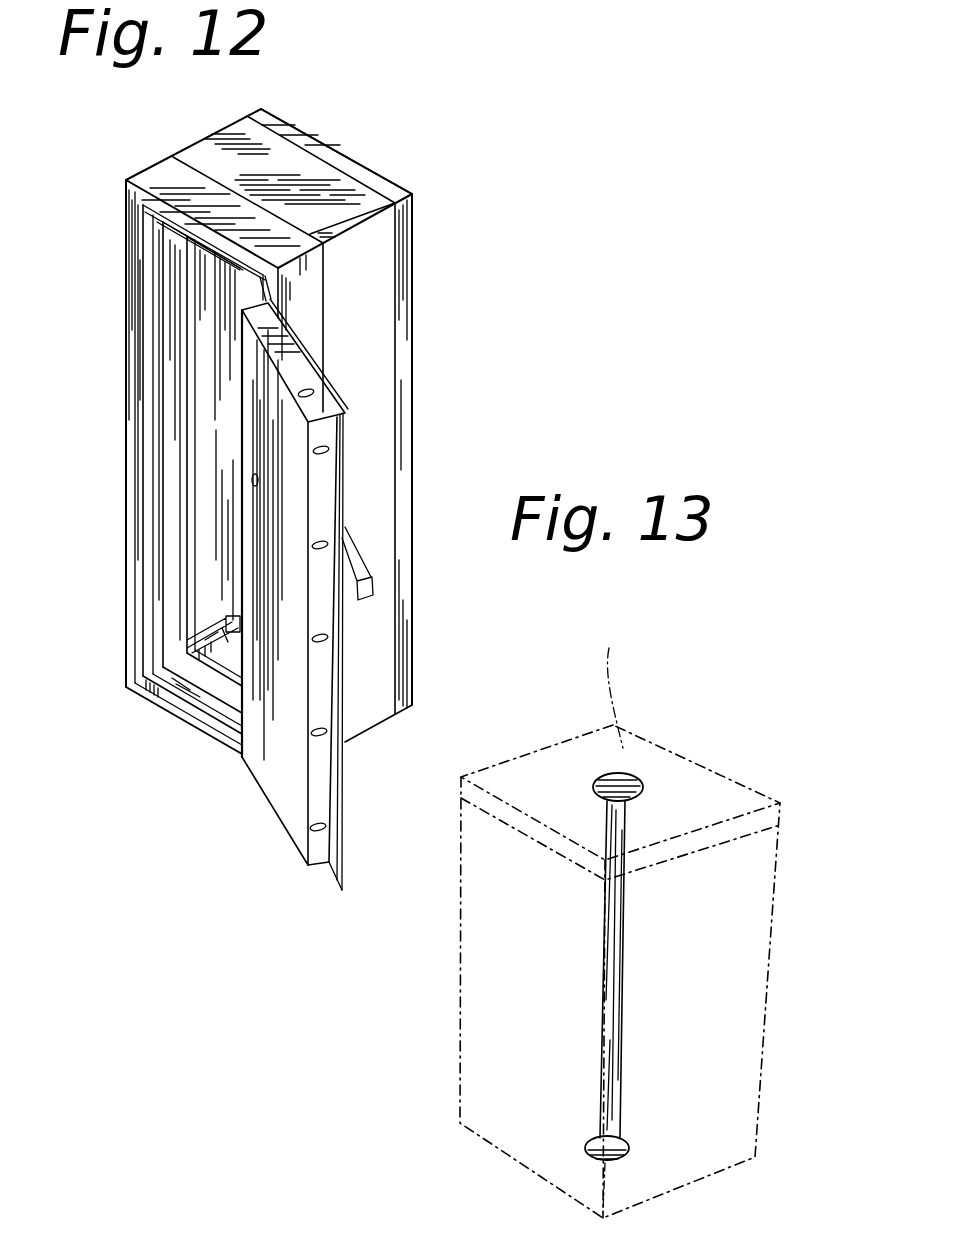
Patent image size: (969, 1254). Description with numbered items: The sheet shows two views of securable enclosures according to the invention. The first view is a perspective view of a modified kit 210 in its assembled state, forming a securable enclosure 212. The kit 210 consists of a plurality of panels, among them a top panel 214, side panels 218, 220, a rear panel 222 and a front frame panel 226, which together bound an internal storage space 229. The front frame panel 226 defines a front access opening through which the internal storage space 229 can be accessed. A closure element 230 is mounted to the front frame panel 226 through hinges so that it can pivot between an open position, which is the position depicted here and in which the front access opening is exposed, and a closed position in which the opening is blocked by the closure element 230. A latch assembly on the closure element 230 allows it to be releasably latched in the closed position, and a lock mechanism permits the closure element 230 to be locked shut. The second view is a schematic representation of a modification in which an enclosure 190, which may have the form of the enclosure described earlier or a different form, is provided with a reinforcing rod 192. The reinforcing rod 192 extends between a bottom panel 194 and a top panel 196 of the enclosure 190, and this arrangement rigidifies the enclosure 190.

In FIG. 12, the kit 210 is at (440, 253).
In FIG. 12, the securable enclosure 212 is at (420, 340).
In FIG. 12, the top panel 214 is at (293, 167).
In FIG. 12, the side panel 218 is at (182, 150).
In FIG. 12, the side panel 220 is at (360, 300).
In FIG. 12, the rear panel 222 is at (383, 175).
In FIG. 12, the front frame panel 226 is at (137, 697).
In FIG. 12, the internal storage space 229 is at (210, 425).
In FIG. 12, the closure element 230 is at (280, 778).
In FIG. 13, the enclosure 190 is at (783, 868).
In FIG. 13, the reinforcing rod 192 is at (623, 978).
In FIG. 13, the bottom panel 194 is at (670, 1193).
In FIG. 13, the top panel 196 is at (614, 683).